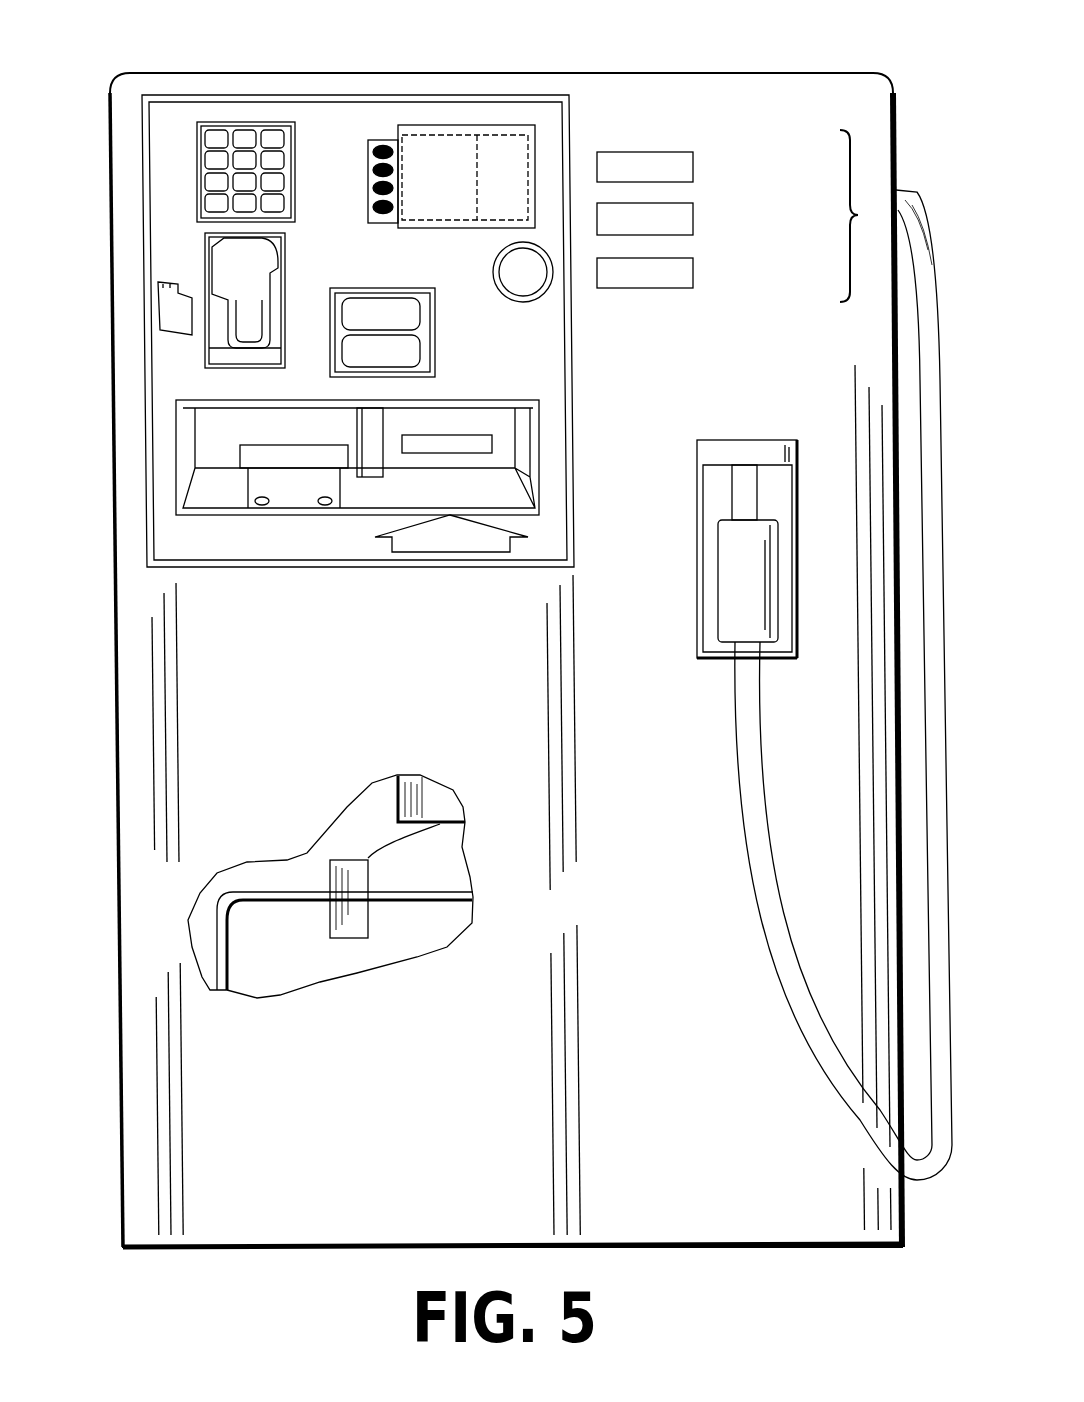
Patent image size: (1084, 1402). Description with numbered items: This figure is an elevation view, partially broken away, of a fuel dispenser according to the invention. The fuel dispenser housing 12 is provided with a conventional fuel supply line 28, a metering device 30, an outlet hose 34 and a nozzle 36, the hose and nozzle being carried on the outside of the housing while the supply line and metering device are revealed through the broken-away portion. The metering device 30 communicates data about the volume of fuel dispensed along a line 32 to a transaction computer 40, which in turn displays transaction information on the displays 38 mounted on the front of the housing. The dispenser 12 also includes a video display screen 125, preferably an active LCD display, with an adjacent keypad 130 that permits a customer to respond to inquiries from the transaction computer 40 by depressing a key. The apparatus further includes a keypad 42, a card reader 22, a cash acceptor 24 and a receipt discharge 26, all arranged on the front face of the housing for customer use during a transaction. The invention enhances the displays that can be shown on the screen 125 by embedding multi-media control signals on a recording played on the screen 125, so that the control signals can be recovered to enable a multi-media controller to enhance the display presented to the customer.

The fuel dispenser housing 12 is at (591, 46).
The card reader 22 is at (222, 272).
The cash acceptor 24 is at (252, 455).
The receipt discharge 26 is at (428, 450).
The fuel supply line 28 is at (217, 914).
The metering device 30 is at (330, 870).
The line 32 is at (390, 842).
The outlet hose 34 is at (917, 1178).
The nozzle 36 is at (766, 619).
The displays 38 is at (860, 215).
The transaction computer 40 is at (393, 776).
The keypad 42 is at (224, 132).
The video display screen 125 is at (523, 93).
The keypad 130 is at (385, 140).